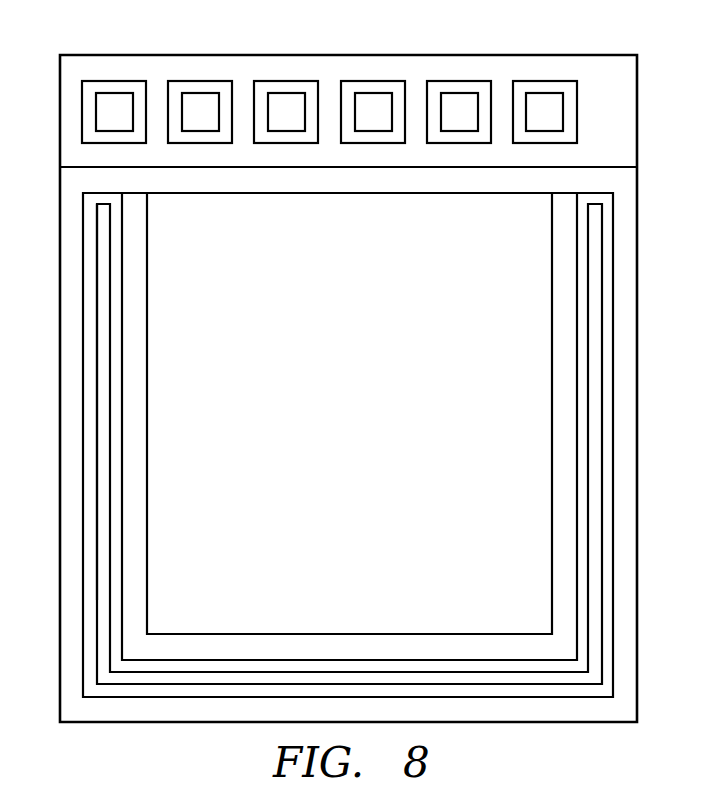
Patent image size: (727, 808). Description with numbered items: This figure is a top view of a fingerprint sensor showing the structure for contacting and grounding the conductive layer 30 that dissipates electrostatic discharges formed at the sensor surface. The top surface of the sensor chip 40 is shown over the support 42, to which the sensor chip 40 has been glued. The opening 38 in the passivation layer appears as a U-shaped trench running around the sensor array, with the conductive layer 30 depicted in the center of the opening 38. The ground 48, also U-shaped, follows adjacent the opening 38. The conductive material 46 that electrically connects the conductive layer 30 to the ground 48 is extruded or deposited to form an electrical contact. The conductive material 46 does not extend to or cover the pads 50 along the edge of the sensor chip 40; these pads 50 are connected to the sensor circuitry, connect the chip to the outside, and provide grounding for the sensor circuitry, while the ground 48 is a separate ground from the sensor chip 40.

The support 42 is at (630, 80).
The pads 50 is at (543, 80).
The opening 38 is at (595, 283).
The conductive layer 30 is at (595, 503).
The conductive material 46 is at (99, 592).
The ground 48 is at (527, 697).
The sensor chip 40 is at (366, 425).